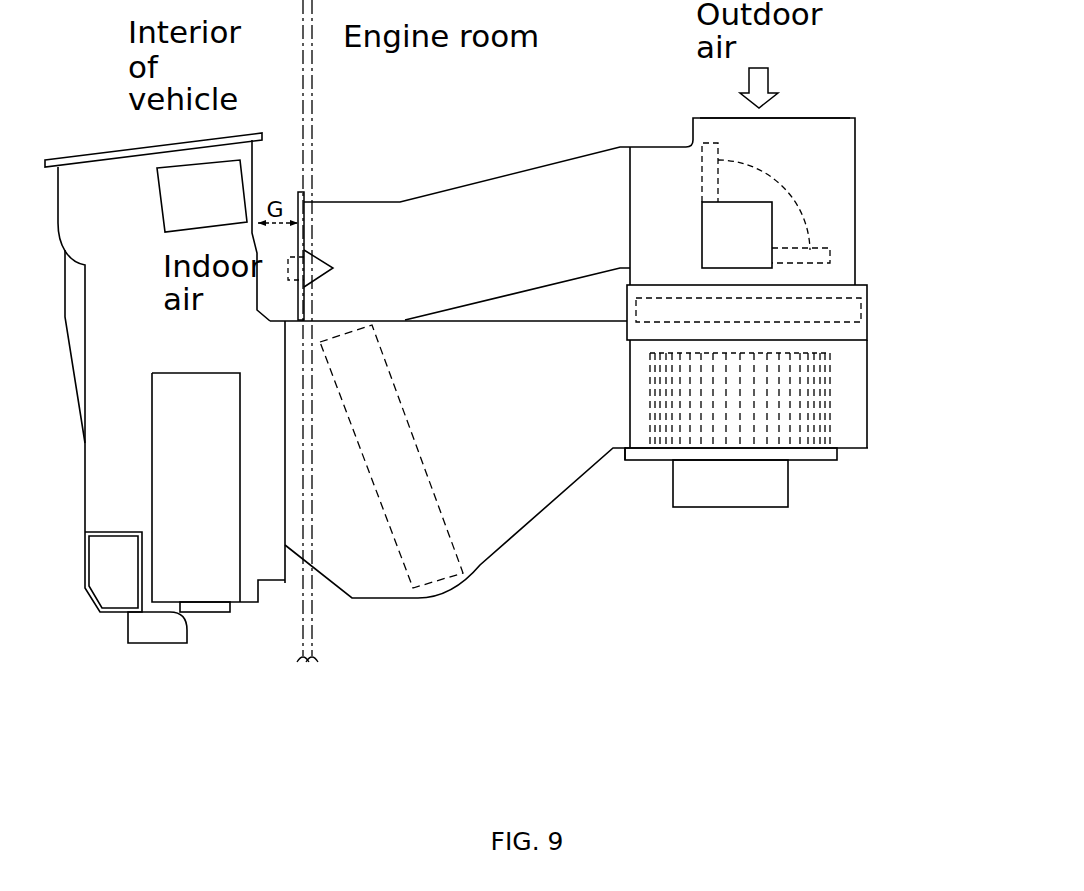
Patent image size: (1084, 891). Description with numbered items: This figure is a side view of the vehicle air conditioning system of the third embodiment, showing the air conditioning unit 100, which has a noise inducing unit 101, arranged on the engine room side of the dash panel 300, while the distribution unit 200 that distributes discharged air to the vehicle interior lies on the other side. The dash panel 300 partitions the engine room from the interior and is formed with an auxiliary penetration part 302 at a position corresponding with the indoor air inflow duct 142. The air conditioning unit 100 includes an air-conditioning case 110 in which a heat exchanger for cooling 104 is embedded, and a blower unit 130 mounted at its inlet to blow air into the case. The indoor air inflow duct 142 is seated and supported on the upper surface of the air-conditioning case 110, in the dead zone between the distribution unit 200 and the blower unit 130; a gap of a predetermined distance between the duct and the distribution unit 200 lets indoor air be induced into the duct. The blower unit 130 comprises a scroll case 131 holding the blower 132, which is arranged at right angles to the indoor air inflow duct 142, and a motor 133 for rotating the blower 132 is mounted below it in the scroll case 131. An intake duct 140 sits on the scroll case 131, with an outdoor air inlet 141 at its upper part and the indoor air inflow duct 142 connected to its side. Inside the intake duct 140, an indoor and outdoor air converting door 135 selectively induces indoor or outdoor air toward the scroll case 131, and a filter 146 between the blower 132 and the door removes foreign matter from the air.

The air conditioning unit 100 is at (585, 549).
The noise inducing unit 101 is at (421, 678).
The heat exchanger for cooling 104 is at (400, 553).
The air-conditioning case 110 is at (453, 590).
The blower unit 130 is at (832, 473).
The scroll case 131 is at (870, 396).
The blower 132 is at (832, 437).
The motor 133 is at (730, 508).
The indoor and outdoor air converting door 135 is at (782, 183).
The intake duct 140 is at (857, 205).
The outdoor air inlet 141 is at (807, 118).
The indoor air inflow duct 142 is at (385, 253).
The filter 146 is at (836, 322).
The distribution unit 200 is at (266, 161).
The dash panel 300 is at (303, 639).
The auxiliary penetration part 302 is at (305, 233).